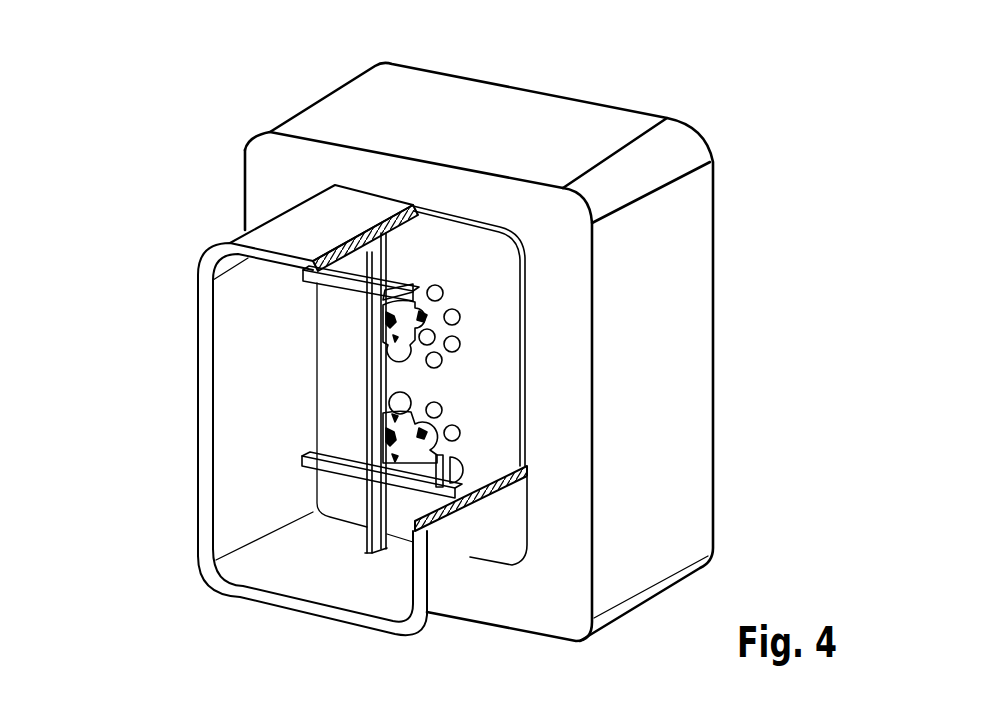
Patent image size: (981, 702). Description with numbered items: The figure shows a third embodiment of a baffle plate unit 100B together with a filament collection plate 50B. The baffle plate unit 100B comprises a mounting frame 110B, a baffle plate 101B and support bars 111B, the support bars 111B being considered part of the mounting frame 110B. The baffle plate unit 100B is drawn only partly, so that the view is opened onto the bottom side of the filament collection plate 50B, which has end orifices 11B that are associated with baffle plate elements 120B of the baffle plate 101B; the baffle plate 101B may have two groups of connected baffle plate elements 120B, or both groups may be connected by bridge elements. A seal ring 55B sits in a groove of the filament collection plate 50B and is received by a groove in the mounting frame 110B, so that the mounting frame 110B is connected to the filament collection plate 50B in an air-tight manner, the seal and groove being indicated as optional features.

The baffle plate unit 100B is at (410, 346).
The filament collection plate 50B is at (650, 505).
The seal ring 55B is at (450, 216).
The mounting frame 110B is at (278, 603).
The support bars 111B is at (365, 357).
The baffle plate elements 120B is at (413, 403).
The baffle plate 101B is at (440, 301).
The end orifices 11B is at (460, 314).